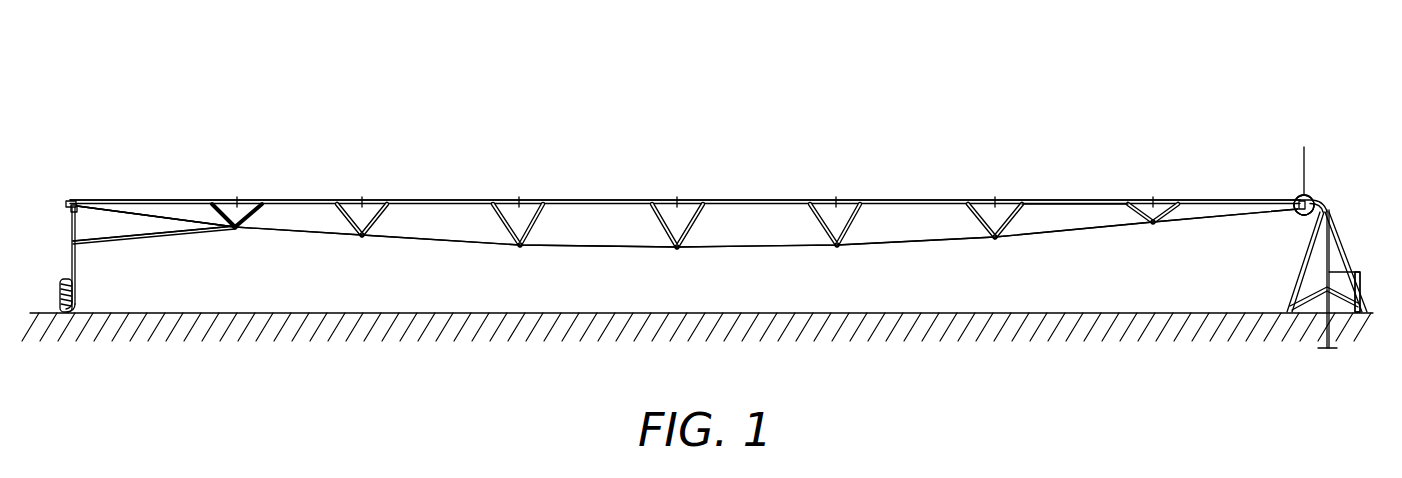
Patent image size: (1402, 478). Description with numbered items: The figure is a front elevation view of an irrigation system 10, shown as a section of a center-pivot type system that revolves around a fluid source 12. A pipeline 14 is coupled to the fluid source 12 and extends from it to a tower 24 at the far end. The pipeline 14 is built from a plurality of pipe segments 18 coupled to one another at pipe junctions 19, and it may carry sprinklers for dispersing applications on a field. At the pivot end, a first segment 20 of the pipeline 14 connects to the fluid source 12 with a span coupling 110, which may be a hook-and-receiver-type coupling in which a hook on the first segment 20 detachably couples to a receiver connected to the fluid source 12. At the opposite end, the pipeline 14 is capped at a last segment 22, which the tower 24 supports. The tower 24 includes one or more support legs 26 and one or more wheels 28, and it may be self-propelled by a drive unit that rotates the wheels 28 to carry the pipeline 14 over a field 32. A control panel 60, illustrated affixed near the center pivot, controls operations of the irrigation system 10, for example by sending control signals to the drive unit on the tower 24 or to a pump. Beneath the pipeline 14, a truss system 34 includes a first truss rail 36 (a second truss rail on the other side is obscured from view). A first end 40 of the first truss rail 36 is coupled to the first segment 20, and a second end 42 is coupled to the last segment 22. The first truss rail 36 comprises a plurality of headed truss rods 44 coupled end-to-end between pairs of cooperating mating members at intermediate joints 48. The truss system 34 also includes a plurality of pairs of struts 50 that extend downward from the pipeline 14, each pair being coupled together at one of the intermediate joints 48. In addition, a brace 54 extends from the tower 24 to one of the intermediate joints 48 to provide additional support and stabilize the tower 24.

The irrigation system 10 is at (1298, 97).
The fluid source 12 is at (1325, 287).
The pipeline 14 is at (440, 200).
The pipe segments 18 is at (293, 200).
The pipe junctions 19 is at (86, 200).
The first segment 20 is at (1317, 193).
The last segment 22 is at (76, 200).
The tower 24 is at (56, 250).
The support legs 26 is at (78, 262).
The wheels 28 is at (62, 298).
The field 32 is at (490, 310).
The truss system 34 is at (898, 249).
The first truss rail 36 is at (1116, 228).
The first end 40 is at (1303, 219).
The second end 42 is at (95, 214).
The headed truss rods 44 is at (190, 222).
The intermediate joints 48 is at (238, 235).
The struts 50 is at (222, 210).
The brace 54 is at (158, 230).
The control panel 60 is at (1350, 293).
The span coupling 110 is at (1312, 186).